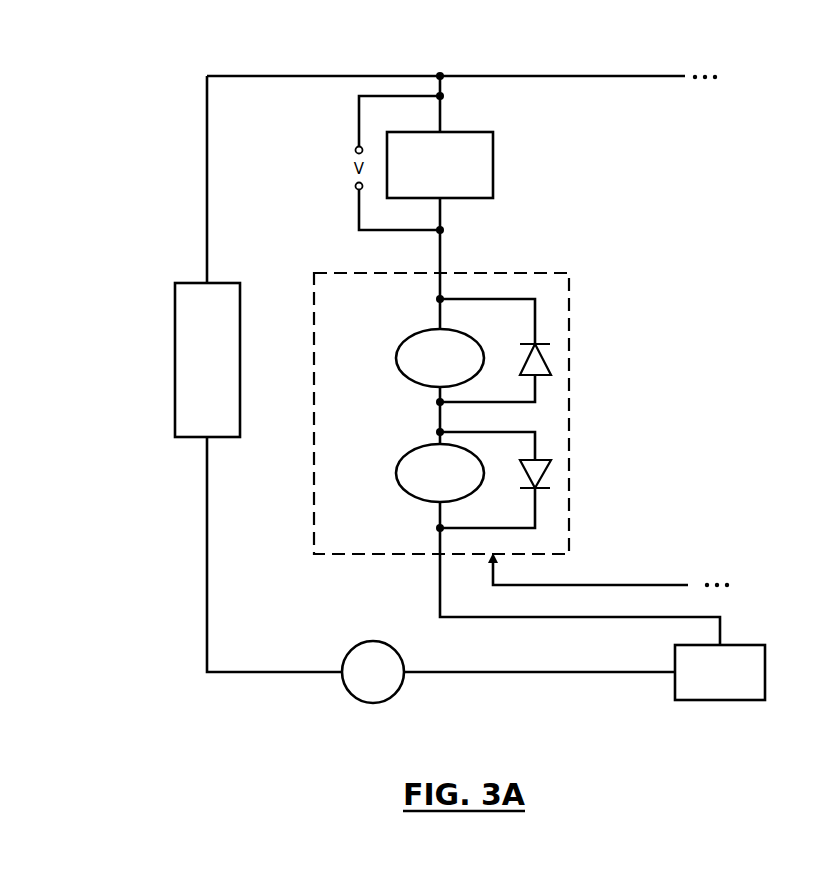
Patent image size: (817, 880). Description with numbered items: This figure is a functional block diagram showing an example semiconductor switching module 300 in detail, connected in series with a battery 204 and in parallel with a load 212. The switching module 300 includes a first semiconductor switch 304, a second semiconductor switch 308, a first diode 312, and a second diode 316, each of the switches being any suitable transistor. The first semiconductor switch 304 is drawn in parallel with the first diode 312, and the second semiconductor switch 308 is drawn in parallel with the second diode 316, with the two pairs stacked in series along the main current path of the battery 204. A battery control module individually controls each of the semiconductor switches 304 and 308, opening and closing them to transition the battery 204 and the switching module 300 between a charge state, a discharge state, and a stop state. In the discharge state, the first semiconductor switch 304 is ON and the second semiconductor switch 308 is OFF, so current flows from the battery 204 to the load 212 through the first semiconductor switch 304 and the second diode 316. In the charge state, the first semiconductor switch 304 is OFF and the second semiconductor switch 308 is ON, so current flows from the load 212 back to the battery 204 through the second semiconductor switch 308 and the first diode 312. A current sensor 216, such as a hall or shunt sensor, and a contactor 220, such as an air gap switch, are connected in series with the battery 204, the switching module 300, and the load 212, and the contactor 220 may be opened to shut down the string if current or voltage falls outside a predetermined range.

The battery 204 is at (455, 199).
The load 212 is at (175, 360).
The current sensor 216 is at (675, 688).
The contactor 220 is at (373, 641).
The semiconductor switching module 300 is at (569, 290).
The first semiconductor switch 304 is at (396, 358).
The second semiconductor switch 308 is at (396, 473).
The first diode 312 is at (552, 368).
The second diode 316 is at (552, 465).